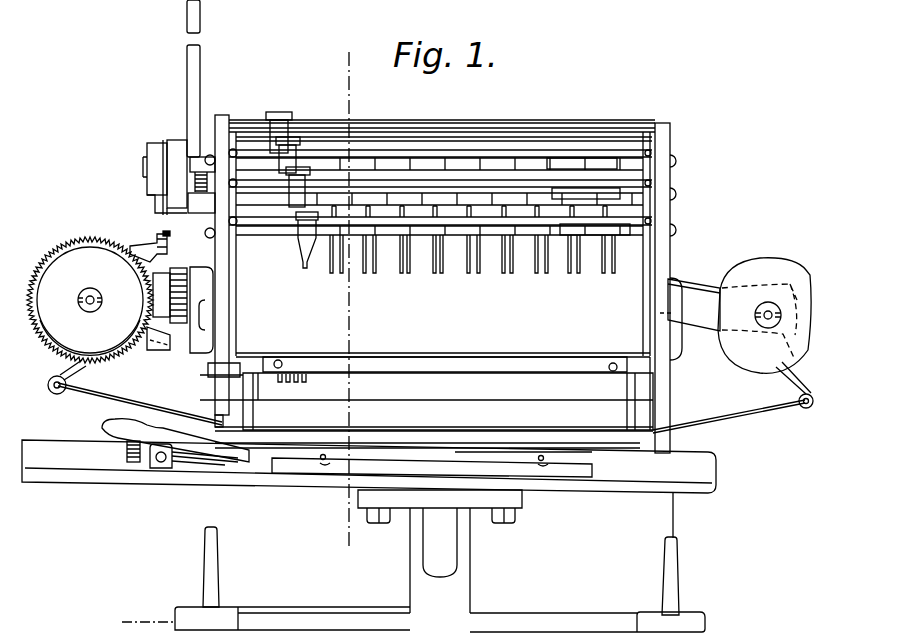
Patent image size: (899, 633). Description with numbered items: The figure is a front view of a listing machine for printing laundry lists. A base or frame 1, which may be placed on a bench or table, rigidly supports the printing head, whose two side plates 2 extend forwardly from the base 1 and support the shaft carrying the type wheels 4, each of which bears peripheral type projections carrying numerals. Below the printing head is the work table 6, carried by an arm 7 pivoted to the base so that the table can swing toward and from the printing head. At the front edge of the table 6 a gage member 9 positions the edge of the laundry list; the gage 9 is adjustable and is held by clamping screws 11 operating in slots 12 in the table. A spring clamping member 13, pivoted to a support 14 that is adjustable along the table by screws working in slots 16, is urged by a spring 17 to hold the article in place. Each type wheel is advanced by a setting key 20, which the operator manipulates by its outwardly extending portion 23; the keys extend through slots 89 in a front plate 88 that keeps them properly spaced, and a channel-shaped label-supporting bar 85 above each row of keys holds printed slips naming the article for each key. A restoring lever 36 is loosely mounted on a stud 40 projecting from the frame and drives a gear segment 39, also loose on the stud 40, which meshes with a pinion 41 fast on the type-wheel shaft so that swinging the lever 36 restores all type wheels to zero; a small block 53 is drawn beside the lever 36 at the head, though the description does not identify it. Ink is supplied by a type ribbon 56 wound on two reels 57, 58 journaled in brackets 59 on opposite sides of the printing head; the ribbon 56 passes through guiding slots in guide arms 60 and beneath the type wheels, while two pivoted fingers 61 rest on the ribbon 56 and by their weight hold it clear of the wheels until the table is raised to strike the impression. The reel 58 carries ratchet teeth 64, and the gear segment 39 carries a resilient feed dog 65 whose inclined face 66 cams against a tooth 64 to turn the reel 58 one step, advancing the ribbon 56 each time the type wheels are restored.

The base or frame 1 is at (655, 566).
The side plates 2 is at (348, 303).
The type wheels 4 is at (280, 382).
The table 6 is at (688, 476).
The arm 7 is at (445, 545).
The gage member 9 is at (587, 468).
The clamping screws 11 is at (545, 467).
The slots 12 is at (560, 466).
The spring clamping member 13 is at (243, 456).
The support 14 is at (163, 470).
The slots 16 is at (192, 464).
The spring 17 is at (126, 456).
The setting key 20 is at (303, 244).
The outwardly extending portion 23 is at (289, 233).
The restoring lever 36 is at (197, 87).
The gear segment 39 is at (166, 231).
The stud 40 is at (147, 166).
The pinion 41 is at (180, 318).
The block 53 is at (206, 156).
The type ribbon 56 is at (126, 397).
The reel 57 is at (768, 268).
The reel 58 is at (80, 250).
The brackets 59 is at (690, 284).
The guide arms 60 is at (805, 409).
The fingers 61 is at (647, 417).
The ratchet teeth 64 is at (104, 356).
The feed dog 65 is at (143, 268).
The inclined face 66 is at (135, 248).
The label-supporting bar 85 is at (590, 157).
The plate 88 is at (442, 238).
The slots 89 is at (572, 265).